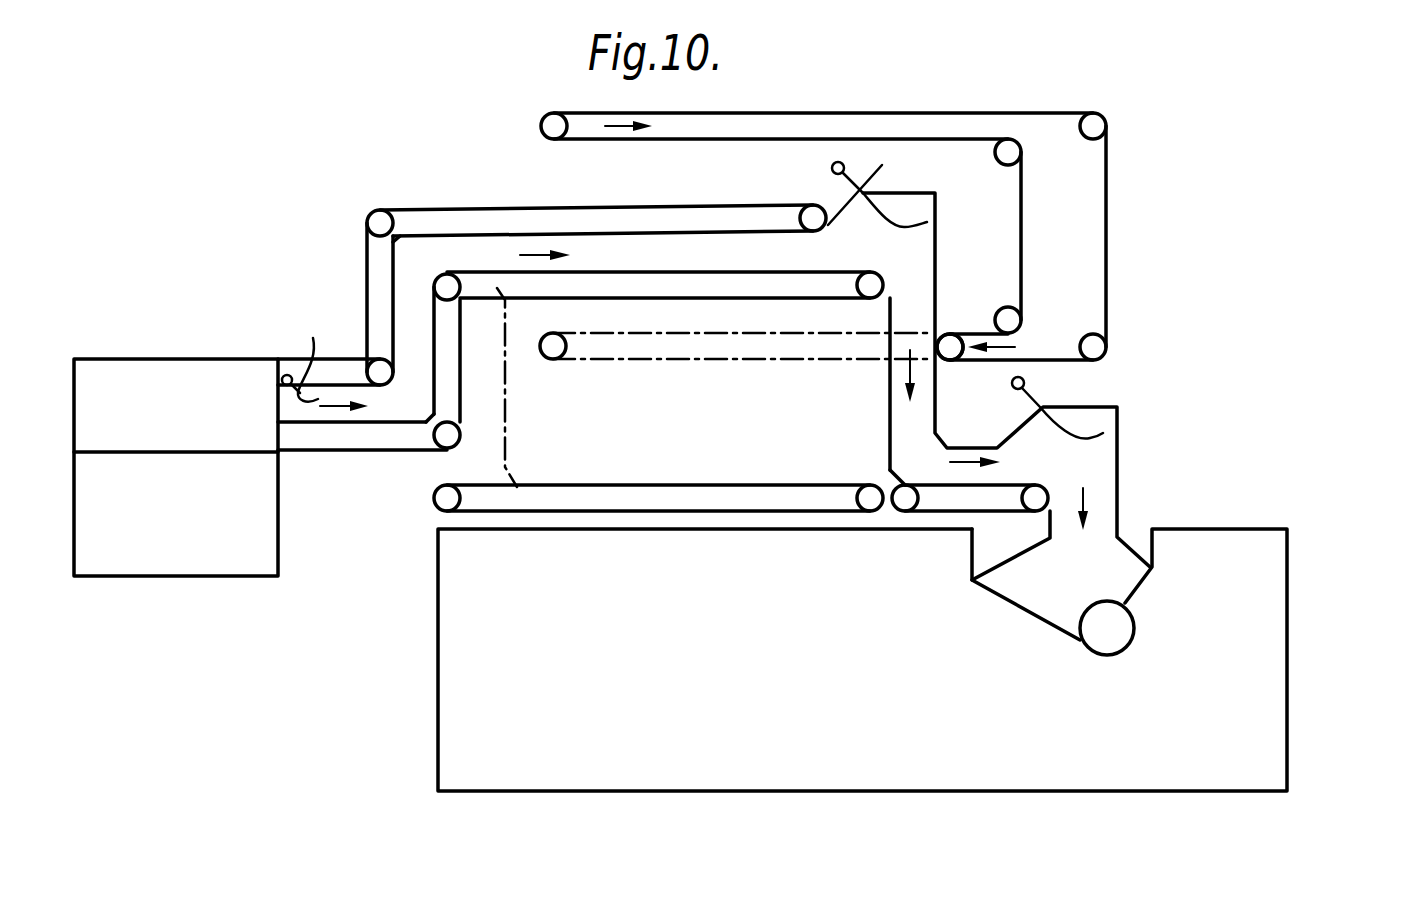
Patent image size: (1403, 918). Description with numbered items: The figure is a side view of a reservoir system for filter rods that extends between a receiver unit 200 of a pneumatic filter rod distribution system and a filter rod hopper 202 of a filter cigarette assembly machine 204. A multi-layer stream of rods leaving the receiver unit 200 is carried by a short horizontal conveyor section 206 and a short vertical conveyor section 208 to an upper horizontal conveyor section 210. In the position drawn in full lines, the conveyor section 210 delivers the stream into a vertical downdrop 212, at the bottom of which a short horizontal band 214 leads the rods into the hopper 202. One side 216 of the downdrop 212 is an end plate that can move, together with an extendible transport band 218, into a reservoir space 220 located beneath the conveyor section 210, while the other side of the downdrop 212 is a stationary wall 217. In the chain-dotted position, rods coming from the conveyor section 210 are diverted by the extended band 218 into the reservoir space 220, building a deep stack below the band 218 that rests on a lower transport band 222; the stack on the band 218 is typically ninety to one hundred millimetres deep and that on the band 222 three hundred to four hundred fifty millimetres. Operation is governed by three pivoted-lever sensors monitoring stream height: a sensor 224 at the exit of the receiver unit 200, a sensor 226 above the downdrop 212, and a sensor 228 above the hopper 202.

The receiver unit 200 is at (198, 424).
The filter rod hopper 202 is at (1120, 582).
The filter cigarette assembly machine 204 is at (1290, 652).
The horizontal conveyor section 206 is at (380, 410).
The vertical conveyor section 208 is at (403, 297).
The upper horizontal conveyor section 210 is at (698, 248).
The vertical downdrop 212 is at (910, 305).
The short horizontal band 214 is at (1008, 482).
The side of the downdrop 216 is at (890, 397).
The stationary wall 217 is at (940, 422).
The extendible transport band 218 is at (977, 363).
The reservoir space 220 is at (736, 420).
The lower transport band 222 is at (656, 485).
The sensor 224 is at (285, 357).
The sensor 226 is at (886, 187).
The sensor 228 is at (1090, 405).